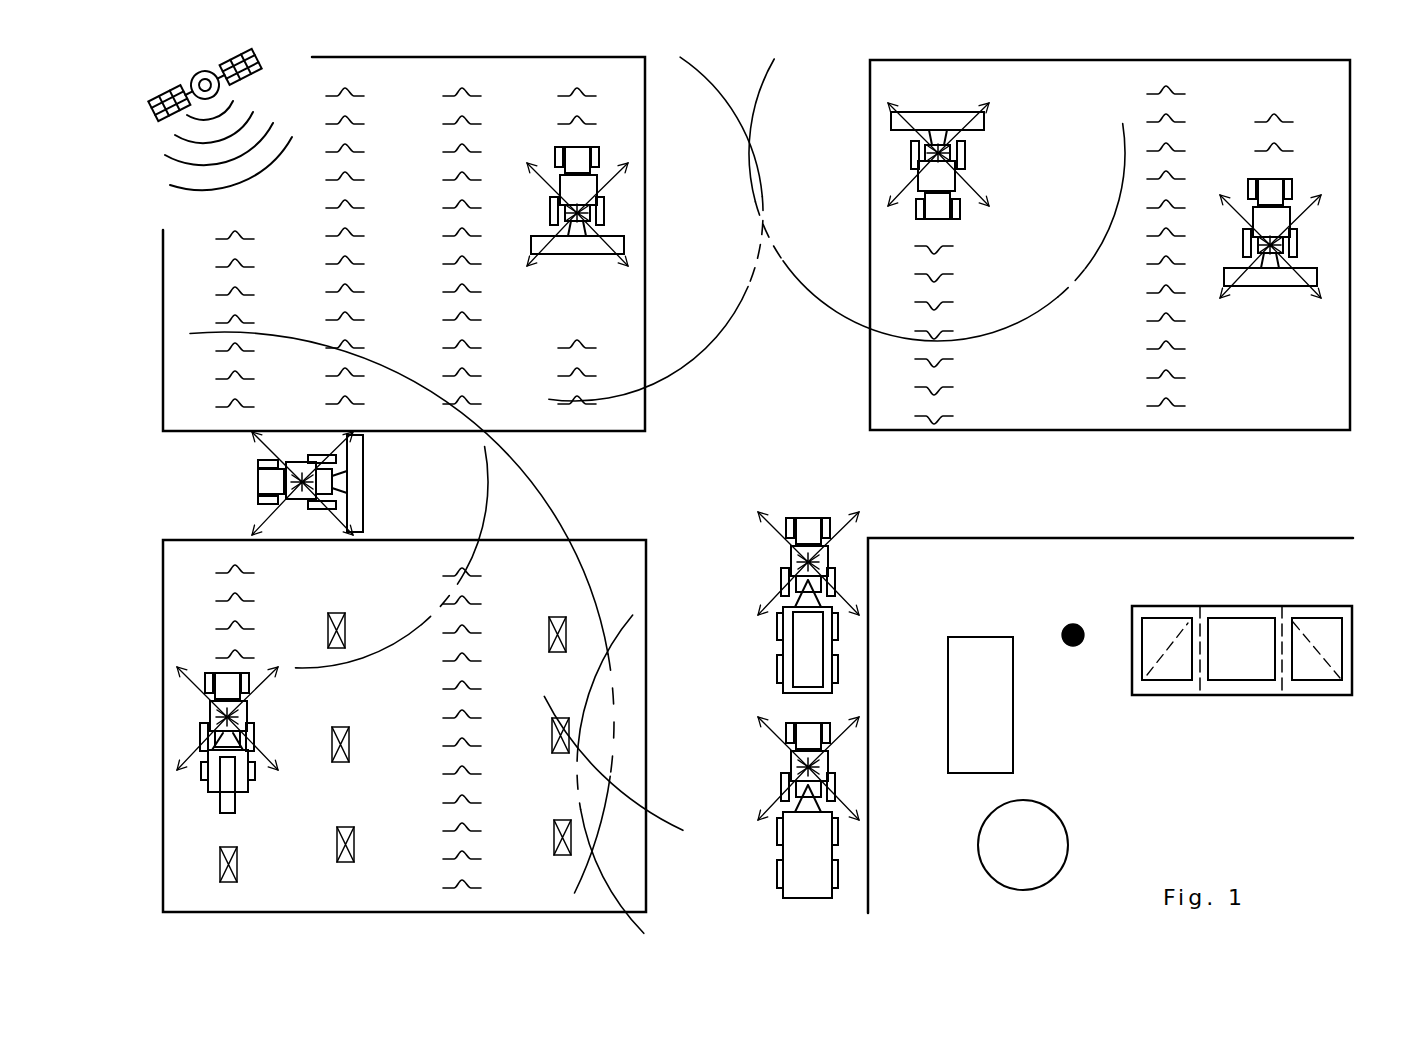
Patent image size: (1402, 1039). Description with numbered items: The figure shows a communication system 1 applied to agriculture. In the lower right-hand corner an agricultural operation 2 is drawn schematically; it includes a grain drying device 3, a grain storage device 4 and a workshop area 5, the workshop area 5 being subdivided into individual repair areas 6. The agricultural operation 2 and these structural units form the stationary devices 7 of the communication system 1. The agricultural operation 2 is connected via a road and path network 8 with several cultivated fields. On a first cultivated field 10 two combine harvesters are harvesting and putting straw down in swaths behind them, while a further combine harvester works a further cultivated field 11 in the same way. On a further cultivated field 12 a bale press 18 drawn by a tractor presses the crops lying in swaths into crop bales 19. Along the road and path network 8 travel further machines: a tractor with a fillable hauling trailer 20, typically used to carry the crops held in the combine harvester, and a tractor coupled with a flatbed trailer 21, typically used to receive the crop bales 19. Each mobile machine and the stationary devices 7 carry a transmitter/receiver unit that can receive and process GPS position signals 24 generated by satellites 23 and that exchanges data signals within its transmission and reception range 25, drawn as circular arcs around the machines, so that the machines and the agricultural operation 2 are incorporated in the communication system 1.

The communication system 1 is at (150, 463).
The agricultural operation 2 is at (1110, 725).
The grain drying device 3 is at (1000, 735).
The grain storage device 4 is at (1055, 828).
The workshop area 5 is at (1242, 621).
The repair areas 6 is at (1170, 627).
The stationary devices 7 is at (1238, 797).
The road and path network 8 is at (769, 480).
The first cultivated field 10 is at (1222, 432).
The further cultivated field 11 is at (636, 432).
The further cultivated field 12 is at (203, 568).
The bale press 18 is at (243, 783).
The crop bales 19 is at (352, 845).
The fillable hauling trailer 20 is at (819, 584).
The flatbed trailer 21 is at (832, 853).
The satellites 23 is at (250, 72).
The GPS position signals 24 is at (258, 172).
The transmission and reception range 25 is at (655, 388).